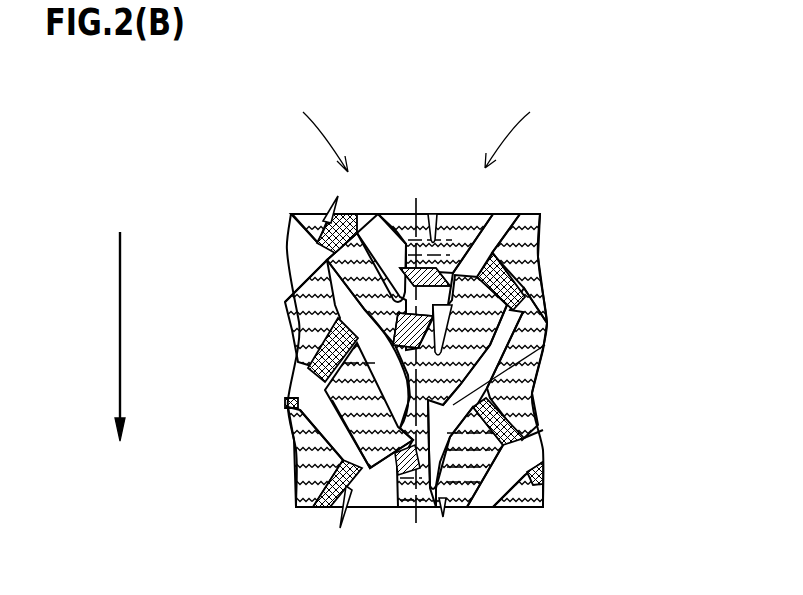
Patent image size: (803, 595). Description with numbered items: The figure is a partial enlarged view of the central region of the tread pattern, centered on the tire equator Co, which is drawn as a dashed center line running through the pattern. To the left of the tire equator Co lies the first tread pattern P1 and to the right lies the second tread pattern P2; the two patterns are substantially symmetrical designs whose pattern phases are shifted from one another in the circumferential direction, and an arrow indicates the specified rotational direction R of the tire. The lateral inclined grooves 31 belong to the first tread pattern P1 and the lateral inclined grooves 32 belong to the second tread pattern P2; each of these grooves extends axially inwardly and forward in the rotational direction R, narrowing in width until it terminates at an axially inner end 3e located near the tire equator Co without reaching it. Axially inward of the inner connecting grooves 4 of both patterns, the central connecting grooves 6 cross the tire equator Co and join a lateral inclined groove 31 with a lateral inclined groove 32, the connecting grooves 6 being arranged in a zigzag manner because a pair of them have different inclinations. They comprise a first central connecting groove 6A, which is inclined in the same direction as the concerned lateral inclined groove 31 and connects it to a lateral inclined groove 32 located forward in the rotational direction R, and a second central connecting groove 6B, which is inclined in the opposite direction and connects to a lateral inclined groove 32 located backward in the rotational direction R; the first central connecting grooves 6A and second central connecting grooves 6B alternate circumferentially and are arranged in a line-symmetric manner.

The lateral inclined groove 31 is at (297, 250).
The lateral inclined groove 32 is at (478, 242).
The inner connecting groove 4 is at (298, 340).
The central connecting groove 6 is at (622, 236).
The first central connecting groove 6A is at (477, 357).
The second central connecting groove 6B is at (405, 312).
The axially inner end 3e is at (365, 508).
The tire equator Co is at (410, 348).
The first tread pattern P1 is at (310, 130).
The second tread pattern P2 is at (523, 128).
The rotational direction R is at (108, 336).